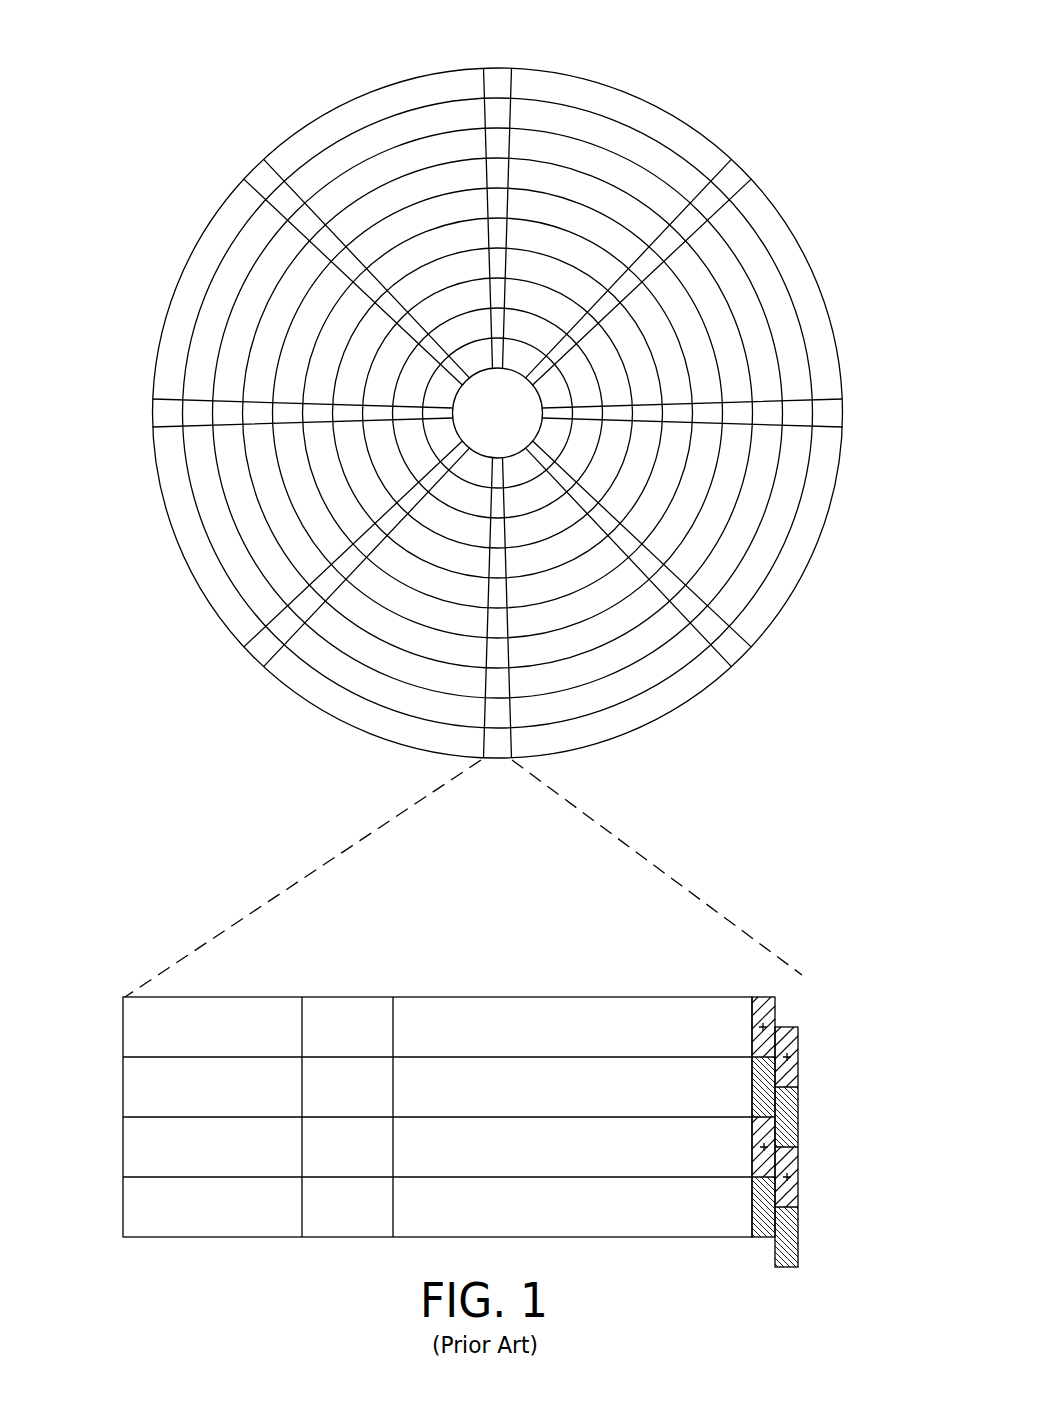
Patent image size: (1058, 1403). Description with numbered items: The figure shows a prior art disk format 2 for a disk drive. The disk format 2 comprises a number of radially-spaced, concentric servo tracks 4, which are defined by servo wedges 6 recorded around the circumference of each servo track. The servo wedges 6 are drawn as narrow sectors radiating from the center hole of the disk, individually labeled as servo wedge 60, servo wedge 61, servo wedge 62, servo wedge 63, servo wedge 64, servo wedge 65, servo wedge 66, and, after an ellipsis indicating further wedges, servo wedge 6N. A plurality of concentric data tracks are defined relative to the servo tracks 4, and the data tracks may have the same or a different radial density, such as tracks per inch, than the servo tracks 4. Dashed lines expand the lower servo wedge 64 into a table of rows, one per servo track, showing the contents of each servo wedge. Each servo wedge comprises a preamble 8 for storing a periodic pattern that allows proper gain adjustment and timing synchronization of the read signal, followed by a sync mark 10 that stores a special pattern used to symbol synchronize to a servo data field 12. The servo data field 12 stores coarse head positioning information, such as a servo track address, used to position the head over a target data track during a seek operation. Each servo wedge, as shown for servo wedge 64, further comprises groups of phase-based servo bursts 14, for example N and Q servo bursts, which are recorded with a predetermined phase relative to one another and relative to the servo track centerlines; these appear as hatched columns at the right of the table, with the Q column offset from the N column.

The disk format 2 is at (240, 69).
The servo tracks 4 is at (640, 118).
The servo wedges 6 is at (499, 425).
The servo wedge 60 is at (500, 80).
The servo wedge 61 is at (732, 177).
The servo wedge 62 is at (832, 414).
The servo wedge 63 is at (732, 648).
The servo wedge 64 is at (341, 834).
The servo wedge 65 is at (260, 652).
The servo wedge 66 is at (160, 412).
The servo wedge 6N is at (255, 166).
The preamble 8 is at (222, 997).
The sync mark 10 is at (351, 997).
The servo data field 12 is at (559, 997).
The servo bursts 14 is at (797, 992).